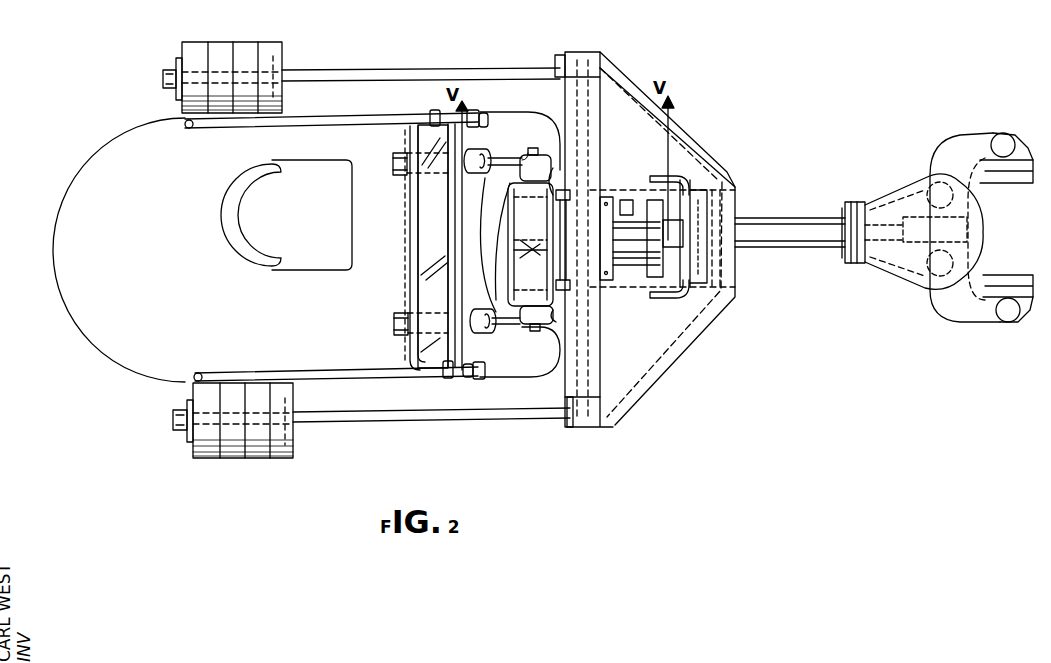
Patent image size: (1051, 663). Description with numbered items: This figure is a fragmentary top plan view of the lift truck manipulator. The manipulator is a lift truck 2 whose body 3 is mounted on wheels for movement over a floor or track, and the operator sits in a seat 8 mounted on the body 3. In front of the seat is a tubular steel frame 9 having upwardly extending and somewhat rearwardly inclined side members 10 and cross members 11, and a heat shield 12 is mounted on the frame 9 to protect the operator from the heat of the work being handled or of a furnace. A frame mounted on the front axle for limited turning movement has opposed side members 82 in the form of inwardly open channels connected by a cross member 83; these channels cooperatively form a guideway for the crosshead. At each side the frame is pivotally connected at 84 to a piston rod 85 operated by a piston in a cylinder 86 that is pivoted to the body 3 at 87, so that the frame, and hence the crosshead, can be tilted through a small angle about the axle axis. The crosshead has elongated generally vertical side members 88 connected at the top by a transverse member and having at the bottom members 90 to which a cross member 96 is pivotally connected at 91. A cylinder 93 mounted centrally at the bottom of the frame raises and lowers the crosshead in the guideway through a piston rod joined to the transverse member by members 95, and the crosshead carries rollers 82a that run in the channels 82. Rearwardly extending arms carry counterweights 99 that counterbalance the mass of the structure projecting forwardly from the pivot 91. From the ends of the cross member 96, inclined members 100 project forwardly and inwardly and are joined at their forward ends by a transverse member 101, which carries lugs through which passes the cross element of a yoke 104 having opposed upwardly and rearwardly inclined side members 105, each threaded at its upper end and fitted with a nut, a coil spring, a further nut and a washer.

The lift truck 2 is at (88, 338).
The body 3 is at (118, 188).
The seat 8 is at (300, 260).
The tubular steel frame 9 is at (446, 114).
The side members 10 is at (425, 117).
The cross members 11 is at (415, 216).
The heat shield 12 is at (430, 275).
The side members 82 is at (550, 170).
The rollers 82a is at (556, 192).
The cross member 83 is at (492, 218).
The pivotal connection 84 is at (527, 155).
The piston rod 85 is at (486, 301).
The cylinder 86 is at (468, 150).
The pivot 87 is at (400, 172).
The side members 88 is at (525, 163).
The bottom members 90 is at (506, 186).
The pivot 91 is at (570, 205).
The cylinder 93 is at (537, 225).
The connecting members 95 is at (531, 250).
The cross member 96 is at (570, 98).
The counterweights 99 is at (232, 45).
The inclined members 100 is at (690, 140).
The transverse member 101 is at (723, 213).
The yoke 104 is at (703, 190).
The side members 105 is at (662, 177).